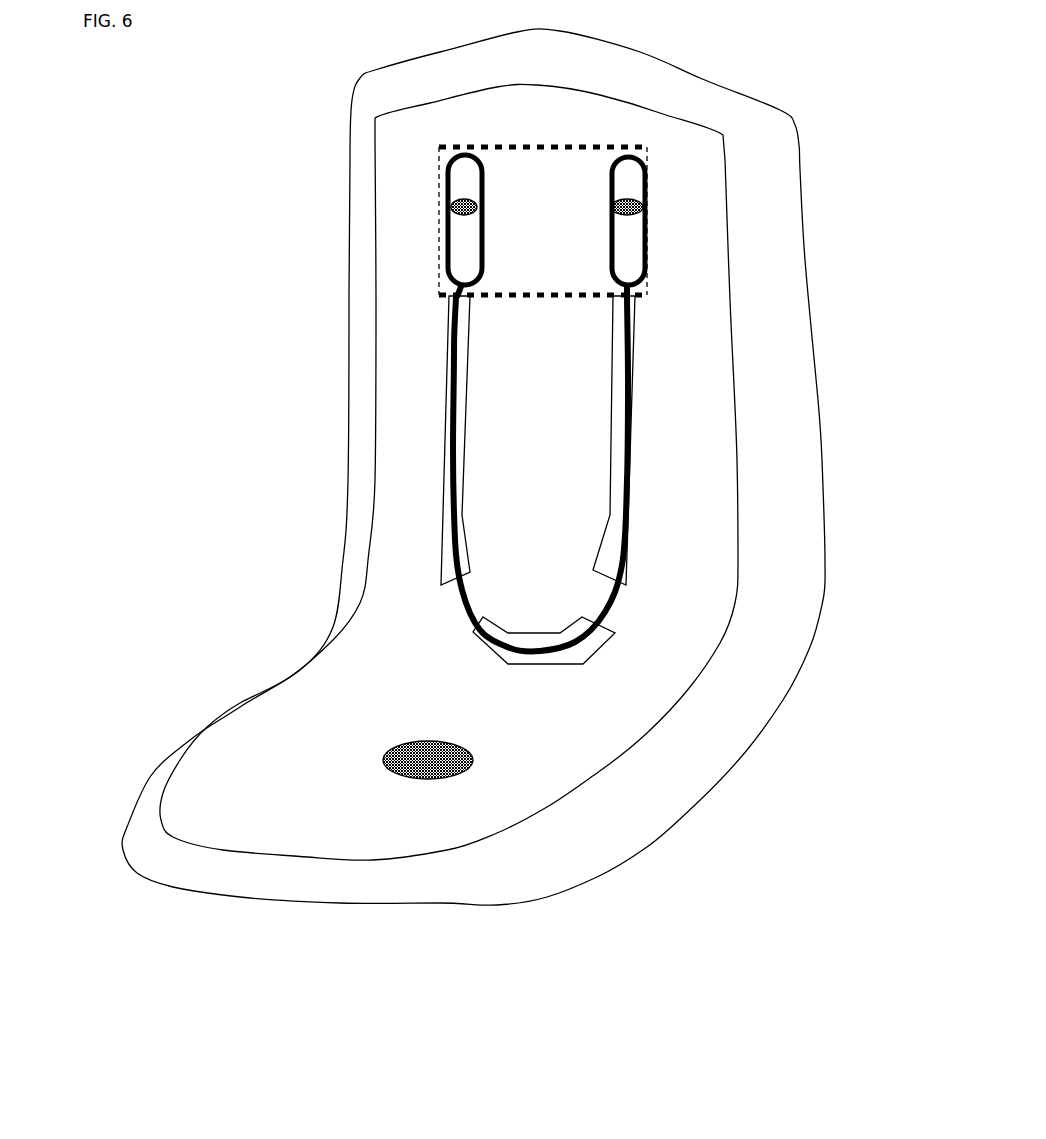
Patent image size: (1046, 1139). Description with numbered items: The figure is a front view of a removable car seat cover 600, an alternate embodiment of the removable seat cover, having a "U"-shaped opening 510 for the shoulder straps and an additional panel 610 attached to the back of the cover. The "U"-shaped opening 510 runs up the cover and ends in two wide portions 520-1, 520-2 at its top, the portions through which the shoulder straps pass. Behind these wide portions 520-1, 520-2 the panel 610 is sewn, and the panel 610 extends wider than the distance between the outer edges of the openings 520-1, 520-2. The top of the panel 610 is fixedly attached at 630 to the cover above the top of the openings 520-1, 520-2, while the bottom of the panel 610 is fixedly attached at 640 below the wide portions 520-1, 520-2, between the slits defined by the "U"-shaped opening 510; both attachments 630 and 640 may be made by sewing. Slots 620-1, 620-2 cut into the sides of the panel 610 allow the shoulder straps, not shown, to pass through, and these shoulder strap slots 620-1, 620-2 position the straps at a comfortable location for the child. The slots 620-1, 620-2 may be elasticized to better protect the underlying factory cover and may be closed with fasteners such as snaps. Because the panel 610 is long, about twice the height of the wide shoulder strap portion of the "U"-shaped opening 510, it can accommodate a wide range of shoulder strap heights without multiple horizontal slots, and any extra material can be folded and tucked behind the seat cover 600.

The removable seat cover 600 is at (277, 793).
The panel 610 is at (527, 197).
The top attachment of panel 630 is at (530, 148).
The bottom attachment of panel 640 is at (590, 298).
The "U"-shaped opening 510 is at (451, 455).
The wide portion of "U"-shaped opening 520-1 is at (458, 250).
The wide portion of "U"-shaped opening 520-2 is at (631, 263).
The shoulder strap slot 620-1 is at (447, 208).
The shoulder strap slot 620-2 is at (647, 207).